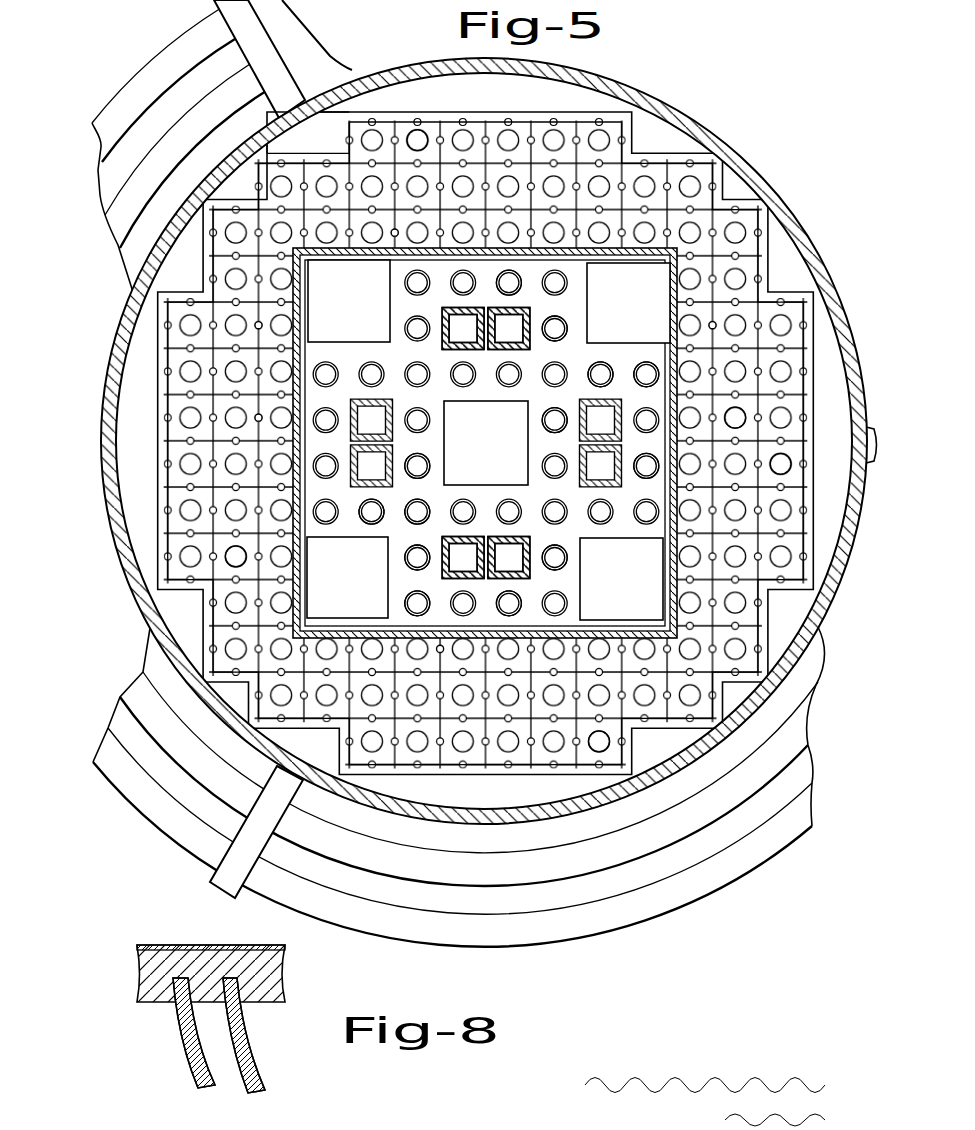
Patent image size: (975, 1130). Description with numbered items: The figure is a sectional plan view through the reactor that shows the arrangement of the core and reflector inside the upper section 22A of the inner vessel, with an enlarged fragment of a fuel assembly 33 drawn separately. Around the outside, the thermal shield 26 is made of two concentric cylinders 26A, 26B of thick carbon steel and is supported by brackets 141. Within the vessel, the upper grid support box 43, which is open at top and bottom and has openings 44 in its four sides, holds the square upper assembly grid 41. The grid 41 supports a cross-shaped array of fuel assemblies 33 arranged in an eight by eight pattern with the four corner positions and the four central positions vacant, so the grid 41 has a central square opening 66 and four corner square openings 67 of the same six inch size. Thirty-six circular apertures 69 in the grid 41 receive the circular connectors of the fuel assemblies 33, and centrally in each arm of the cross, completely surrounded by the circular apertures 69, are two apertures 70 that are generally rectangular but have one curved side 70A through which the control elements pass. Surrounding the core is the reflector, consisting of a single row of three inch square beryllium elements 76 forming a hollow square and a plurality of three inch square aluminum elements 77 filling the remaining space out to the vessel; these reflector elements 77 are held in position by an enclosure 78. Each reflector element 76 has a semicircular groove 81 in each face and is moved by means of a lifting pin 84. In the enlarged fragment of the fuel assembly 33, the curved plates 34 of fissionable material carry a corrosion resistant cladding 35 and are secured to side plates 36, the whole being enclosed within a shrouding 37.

In FIG. 5, the upper section of inner vessel 22A is at (780, 209).
In FIG. 5, the thermal shield 26 is at (740, 886).
In FIG. 5, the inner cylinder of thermal shield 26A is at (482, 905).
In FIG. 5, the outer cylinder of thermal shield 26B is at (528, 843).
In FIG. 5, the fuel assembly 33 is at (647, 368).
In FIG. 8, the fuel plate 34 is at (195, 1028).
In FIG. 8, the corrosion resistant cladding 35 is at (197, 1057).
In FIG. 8, the side plate 36 is at (143, 967).
In FIG. 8, the shrouding 37 is at (183, 935).
In FIG. 5, the upper assembly grid 41 is at (505, 262).
In FIG. 5, the upper grid support box 43 is at (296, 610).
In FIG. 5, the openings in box sides 44 is at (468, 255).
In FIG. 5, the central square opening 66 is at (528, 444).
In FIG. 5, the corner square opening 67 is at (388, 291).
In FIG. 5, the circular aperture 69 is at (600, 375).
In FIG. 5, the control element aperture 70 is at (352, 447).
In FIG. 5, the curved side of aperture 70A is at (395, 427).
In FIG. 5, the beryllium reflector element 76 is at (430, 214).
In FIG. 5, the aluminum reflector element 77 is at (535, 140).
In FIG. 5, the enclosure 78 is at (677, 160).
In FIG. 5, the semicircular groove 81 is at (418, 138).
In FIG. 5, the lifting pin 84 is at (740, 425).
In FIG. 5, the bracket 141 is at (283, 116).